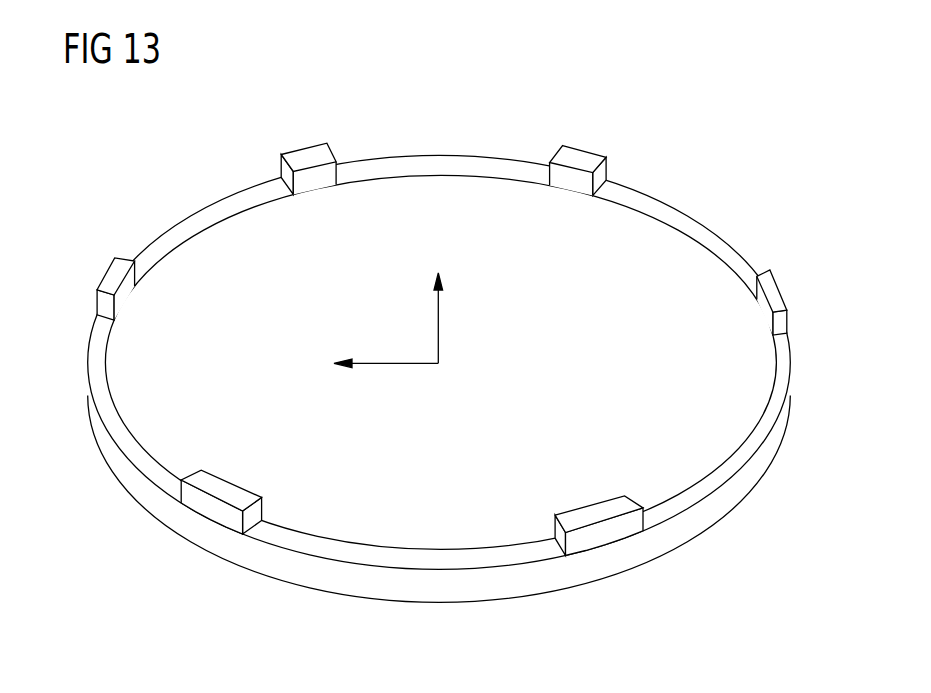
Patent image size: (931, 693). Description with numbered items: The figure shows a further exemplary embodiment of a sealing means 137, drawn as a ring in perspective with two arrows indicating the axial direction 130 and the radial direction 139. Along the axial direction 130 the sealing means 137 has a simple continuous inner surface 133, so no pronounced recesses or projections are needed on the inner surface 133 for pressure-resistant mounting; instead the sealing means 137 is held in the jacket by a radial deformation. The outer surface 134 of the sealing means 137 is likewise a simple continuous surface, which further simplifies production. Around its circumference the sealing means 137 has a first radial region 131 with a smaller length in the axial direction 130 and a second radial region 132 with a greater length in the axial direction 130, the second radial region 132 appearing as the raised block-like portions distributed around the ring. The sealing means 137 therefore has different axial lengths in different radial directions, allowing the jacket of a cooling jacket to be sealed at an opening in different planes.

The sealing means 137 is at (458, 120).
The first radial region 131 is at (242, 200).
The second radial region 132 is at (310, 156).
The inner surface 133 is at (183, 256).
The outer surface 134 is at (124, 477).
The axial direction 130 is at (440, 328).
The radial direction 139 is at (395, 365).